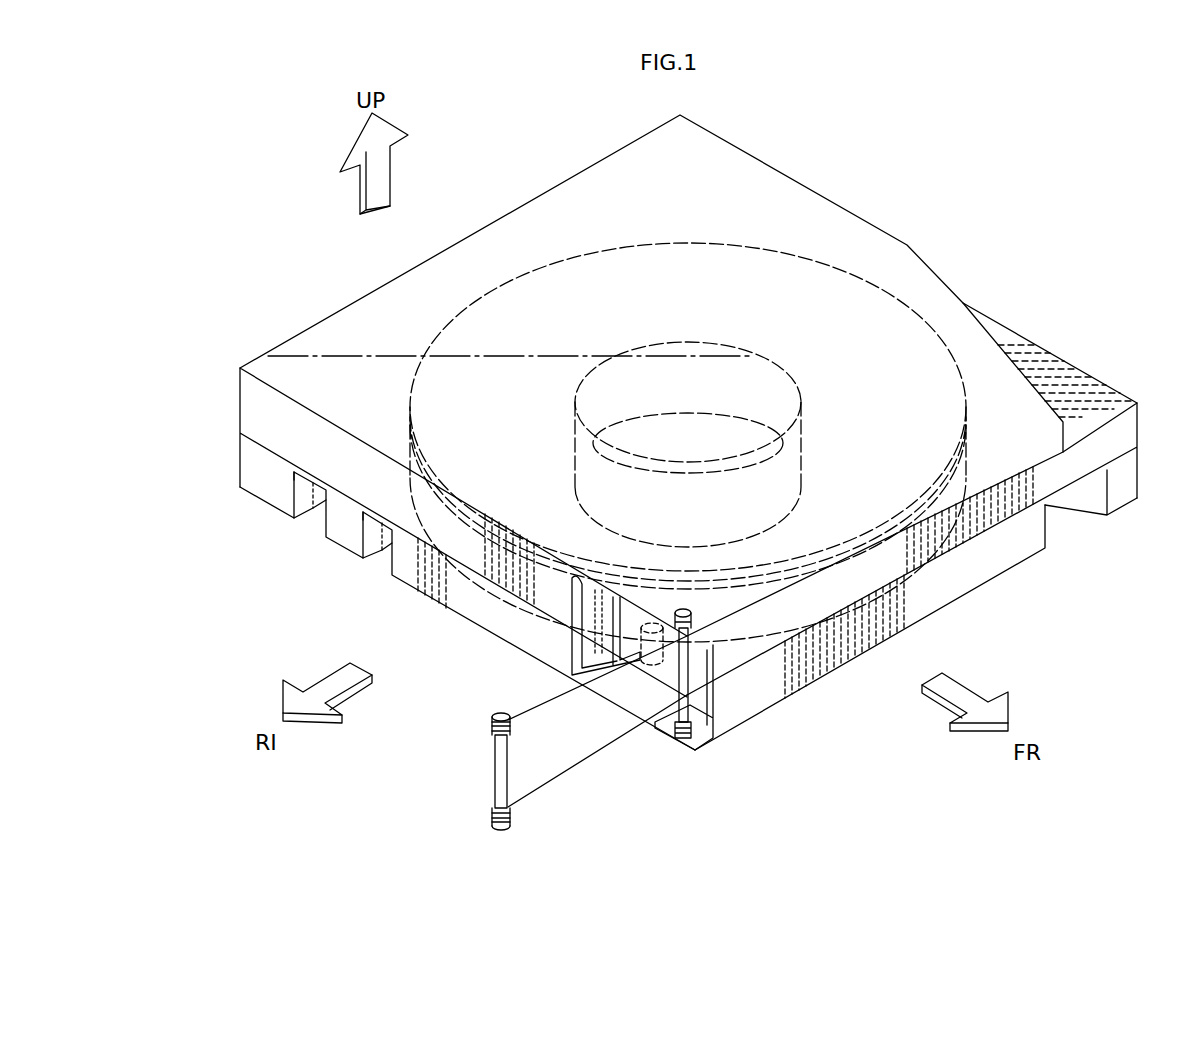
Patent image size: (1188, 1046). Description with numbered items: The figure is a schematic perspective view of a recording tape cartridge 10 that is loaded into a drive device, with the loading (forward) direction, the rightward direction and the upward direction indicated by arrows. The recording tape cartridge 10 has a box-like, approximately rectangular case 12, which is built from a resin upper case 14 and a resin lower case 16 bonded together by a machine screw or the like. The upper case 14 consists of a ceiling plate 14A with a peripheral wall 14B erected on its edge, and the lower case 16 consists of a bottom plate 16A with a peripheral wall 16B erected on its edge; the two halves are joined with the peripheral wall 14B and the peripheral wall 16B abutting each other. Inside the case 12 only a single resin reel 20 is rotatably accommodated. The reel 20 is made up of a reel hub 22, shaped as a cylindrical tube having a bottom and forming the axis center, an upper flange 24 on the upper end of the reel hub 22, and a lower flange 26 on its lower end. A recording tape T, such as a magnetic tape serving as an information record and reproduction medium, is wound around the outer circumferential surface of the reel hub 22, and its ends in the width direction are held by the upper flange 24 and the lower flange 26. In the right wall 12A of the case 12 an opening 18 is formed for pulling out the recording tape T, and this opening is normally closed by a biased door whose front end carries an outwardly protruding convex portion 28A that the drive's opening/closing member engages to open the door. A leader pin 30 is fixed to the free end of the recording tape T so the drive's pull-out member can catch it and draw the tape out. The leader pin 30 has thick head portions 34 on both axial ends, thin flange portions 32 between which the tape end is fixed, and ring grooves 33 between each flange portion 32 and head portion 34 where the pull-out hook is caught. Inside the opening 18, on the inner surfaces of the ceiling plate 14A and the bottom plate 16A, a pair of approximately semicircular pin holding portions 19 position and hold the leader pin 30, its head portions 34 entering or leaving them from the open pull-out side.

The recording tape cartridge 10 is at (666, 432).
The case 12 is at (1030, 332).
The right wall 12A is at (358, 548).
The upper case 14 is at (651, 406).
The ceiling plate 14A is at (565, 205).
The peripheral wall 14B is at (260, 410).
The lower case 16 is at (666, 600).
The bottom plate 16A is at (1120, 518).
The peripheral wall 16B is at (255, 465).
The opening 18 is at (590, 668).
The pin holding portion 19 is at (655, 615).
The reel 20 is at (688, 242).
The reel hub 22 is at (770, 385).
The upper flange 24 is at (480, 325).
The lower flange 26 is at (1072, 398).
The convex portion 28A is at (580, 640).
The leader pin 30 is at (611, 742).
The flange portion 32 is at (490, 727).
The ring groove 33 is at (490, 735).
The head portion 34 is at (492, 715).
The recording tape T is at (580, 770).